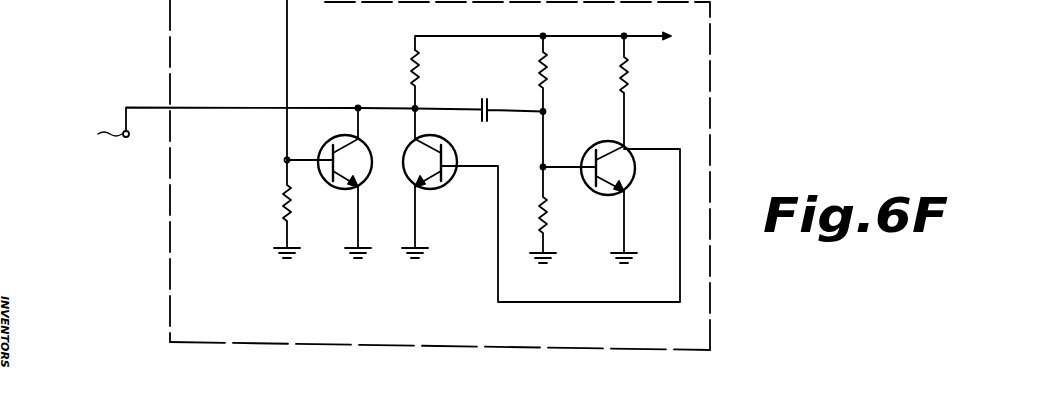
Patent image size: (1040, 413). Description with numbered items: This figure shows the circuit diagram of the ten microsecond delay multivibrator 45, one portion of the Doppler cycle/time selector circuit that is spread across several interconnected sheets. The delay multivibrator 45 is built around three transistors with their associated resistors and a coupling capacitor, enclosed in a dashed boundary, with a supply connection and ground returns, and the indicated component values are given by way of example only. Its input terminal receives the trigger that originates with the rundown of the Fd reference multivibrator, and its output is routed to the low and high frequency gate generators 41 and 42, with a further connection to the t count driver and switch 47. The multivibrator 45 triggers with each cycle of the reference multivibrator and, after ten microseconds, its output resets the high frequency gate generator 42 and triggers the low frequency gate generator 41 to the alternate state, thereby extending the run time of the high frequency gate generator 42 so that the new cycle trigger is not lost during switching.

The 10 microsecond delay multivibrator 45 is at (512, 351).
The low frequency gate generator 41 is at (81, 159).
The high frequency gate generator 42 is at (116, 186).
The t count driver and switch 47 is at (862, 11).